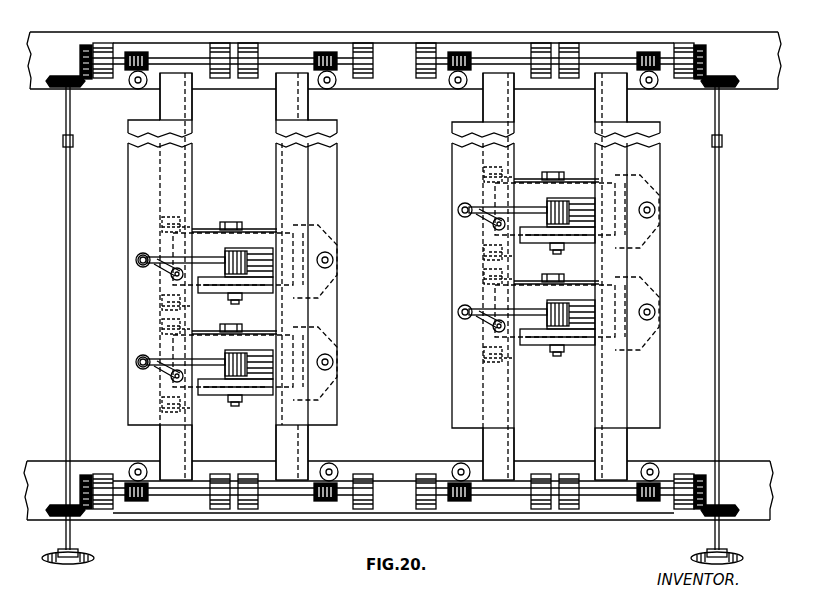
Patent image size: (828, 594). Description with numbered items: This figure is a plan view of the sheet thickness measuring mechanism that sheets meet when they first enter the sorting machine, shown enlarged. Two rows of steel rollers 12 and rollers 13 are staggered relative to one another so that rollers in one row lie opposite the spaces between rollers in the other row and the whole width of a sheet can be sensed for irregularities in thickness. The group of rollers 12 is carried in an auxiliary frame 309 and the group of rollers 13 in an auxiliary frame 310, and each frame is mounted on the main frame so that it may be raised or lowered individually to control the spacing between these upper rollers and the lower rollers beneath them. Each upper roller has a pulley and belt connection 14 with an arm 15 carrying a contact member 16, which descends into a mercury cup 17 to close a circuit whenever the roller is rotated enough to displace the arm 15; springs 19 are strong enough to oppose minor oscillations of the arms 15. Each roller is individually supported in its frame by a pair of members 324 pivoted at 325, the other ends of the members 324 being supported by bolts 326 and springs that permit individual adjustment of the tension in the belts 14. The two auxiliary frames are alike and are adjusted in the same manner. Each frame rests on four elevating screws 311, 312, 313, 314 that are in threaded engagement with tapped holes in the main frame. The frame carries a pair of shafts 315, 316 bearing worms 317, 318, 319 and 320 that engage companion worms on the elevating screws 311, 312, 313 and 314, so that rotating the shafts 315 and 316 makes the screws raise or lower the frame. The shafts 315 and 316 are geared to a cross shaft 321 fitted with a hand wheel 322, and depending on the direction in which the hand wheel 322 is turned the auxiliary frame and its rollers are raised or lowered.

The rollers 12 is at (262, 242).
The rollers 13 is at (580, 190).
The pulley and belt connection 14 is at (223, 292).
The arm 15 is at (200, 256).
The contact member 16 is at (136, 260).
The mercury cup 17 is at (146, 252).
The springs 19 is at (164, 268).
The auxiliary frame 309 is at (298, 452).
The auxiliary frame 310 is at (617, 457).
The elevating screw 311 is at (139, 462).
The elevating screw 312 is at (134, 89).
The elevating screw 313 is at (331, 88).
The elevating screw 314 is at (334, 464).
The shaft 315 is at (182, 57).
The shaft 316 is at (183, 497).
The worm 317 is at (138, 52).
The worm 318 is at (327, 52).
The worm 319 is at (328, 502).
The worm 320 is at (141, 502).
The cross shaft 321 is at (65, 412).
The hand wheel 322 is at (60, 564).
The members 324 is at (204, 228).
The pivot 325 is at (170, 214).
The bolts 326 is at (334, 363).